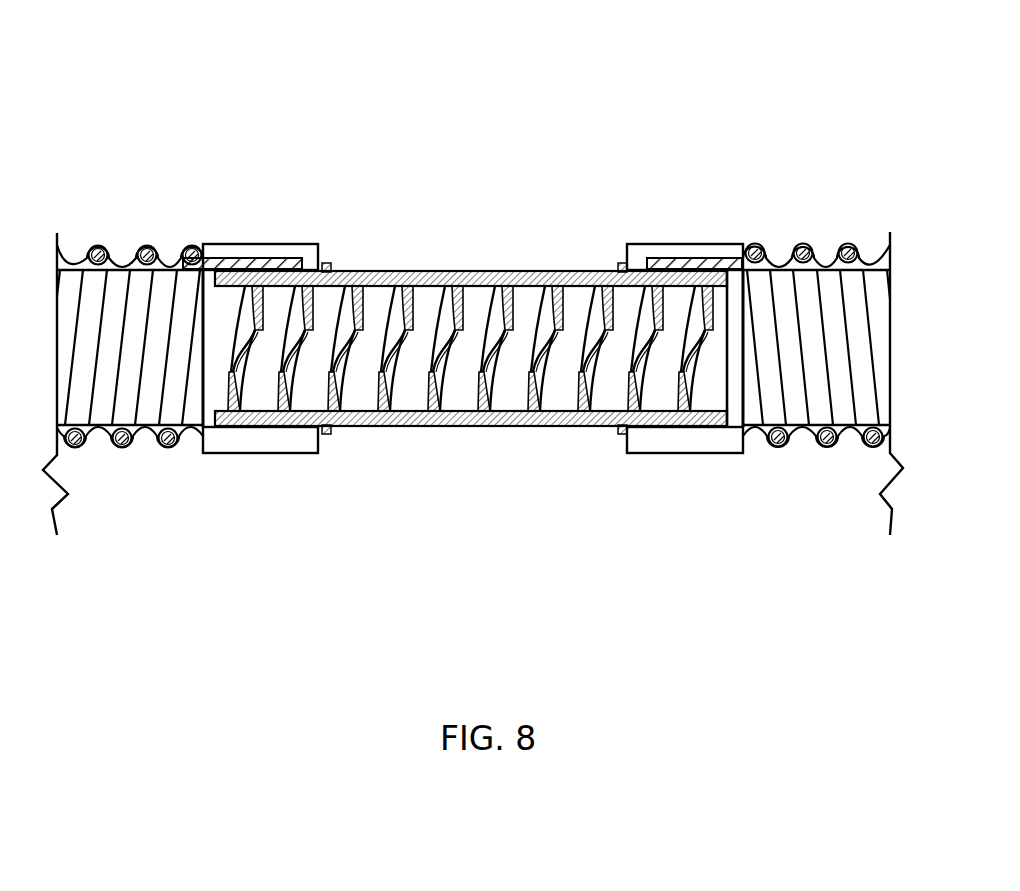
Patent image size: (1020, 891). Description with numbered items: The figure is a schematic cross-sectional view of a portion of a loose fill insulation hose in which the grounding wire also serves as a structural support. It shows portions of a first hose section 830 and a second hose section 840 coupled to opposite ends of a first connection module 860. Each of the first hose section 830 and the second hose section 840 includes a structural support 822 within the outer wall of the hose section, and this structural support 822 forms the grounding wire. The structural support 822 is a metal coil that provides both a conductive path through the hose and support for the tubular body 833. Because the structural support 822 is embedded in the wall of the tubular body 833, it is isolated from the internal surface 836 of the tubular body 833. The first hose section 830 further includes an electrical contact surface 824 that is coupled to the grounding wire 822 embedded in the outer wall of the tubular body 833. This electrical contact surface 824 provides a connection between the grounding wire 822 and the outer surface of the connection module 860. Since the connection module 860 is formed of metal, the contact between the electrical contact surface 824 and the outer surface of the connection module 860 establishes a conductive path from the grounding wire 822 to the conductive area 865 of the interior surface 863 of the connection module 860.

The first hose section 830 is at (117, 158).
The second hose section 840 is at (807, 160).
The tubular body 833 is at (160, 228).
The internal surface 836 is at (97, 277).
The structural support 822 is at (110, 452).
The electrical contact surface 824 is at (282, 275).
The first connection module 860 is at (402, 525).
The interior surface 863 is at (478, 298).
The conductive area 865 is at (528, 298).